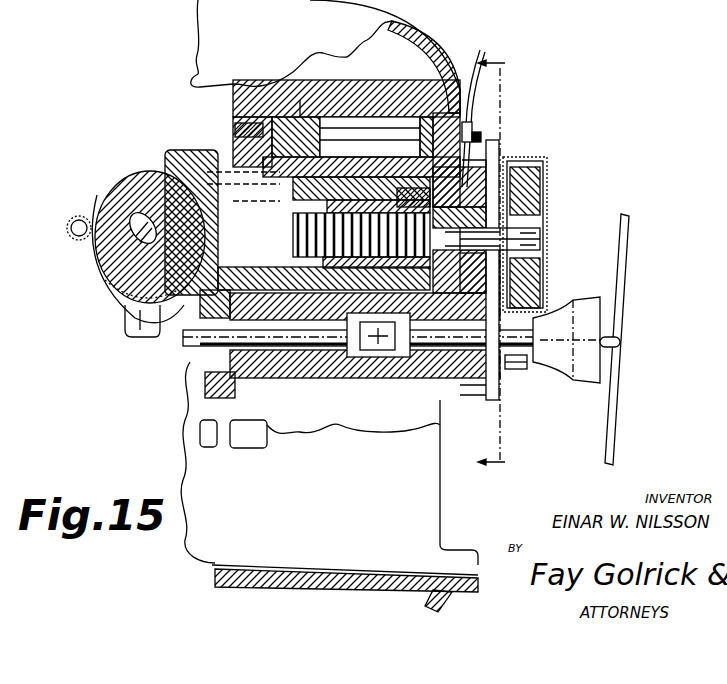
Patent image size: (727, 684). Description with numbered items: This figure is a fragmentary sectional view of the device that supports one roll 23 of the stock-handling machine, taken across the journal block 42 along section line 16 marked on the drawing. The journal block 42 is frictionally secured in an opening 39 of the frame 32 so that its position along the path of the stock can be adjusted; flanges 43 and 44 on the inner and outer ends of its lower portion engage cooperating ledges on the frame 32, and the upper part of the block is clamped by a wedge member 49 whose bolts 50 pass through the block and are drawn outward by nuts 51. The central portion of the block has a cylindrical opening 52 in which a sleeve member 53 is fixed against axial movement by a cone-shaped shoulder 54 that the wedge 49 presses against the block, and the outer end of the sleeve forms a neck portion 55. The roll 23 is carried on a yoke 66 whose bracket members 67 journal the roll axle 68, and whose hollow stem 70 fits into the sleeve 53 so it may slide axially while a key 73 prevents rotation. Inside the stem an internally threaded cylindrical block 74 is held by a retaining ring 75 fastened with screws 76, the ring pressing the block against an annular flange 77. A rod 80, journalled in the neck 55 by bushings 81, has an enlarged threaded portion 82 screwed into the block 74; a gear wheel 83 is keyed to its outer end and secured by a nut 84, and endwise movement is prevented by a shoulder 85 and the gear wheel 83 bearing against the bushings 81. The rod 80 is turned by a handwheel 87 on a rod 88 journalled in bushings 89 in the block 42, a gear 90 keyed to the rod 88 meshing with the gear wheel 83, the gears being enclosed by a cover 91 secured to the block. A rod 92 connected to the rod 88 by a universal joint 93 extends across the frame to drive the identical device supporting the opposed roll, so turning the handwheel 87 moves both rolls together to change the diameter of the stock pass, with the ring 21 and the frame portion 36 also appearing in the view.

The line 16— 16 is at (500, 269).
The ring 21 is at (68, 236).
The roll 23 is at (95, 272).
The frame 32 is at (445, 40).
The housing 36 is at (195, 85).
The opening 39 is at (470, 95).
The journal block 42 is at (483, 145).
The flange 43 is at (228, 372).
The flange 44 is at (485, 388).
The wedge member 49 is at (236, 118).
The bolts 50 is at (476, 132).
The nuts 51 is at (467, 125).
The cylindrical opening 52 is at (345, 160).
The sleeve member 53 is at (435, 114).
The cone-shaped shoulder 54 is at (278, 120).
The neck portion 55 is at (462, 212).
The yoke 66 is at (165, 158).
The bracket members 67 is at (125, 325).
The axle 68 is at (132, 215).
The stem 70 is at (330, 212).
The key 73 is at (234, 160).
The internally threaded cylindrical block 74 is at (315, 262).
The retaining ring 75 is at (500, 273).
The screws 76 is at (400, 188).
The annular flange 77 is at (297, 208).
The rod 80 is at (500, 230).
The bushings 81 is at (468, 235).
The enlarged threaded portion 82 is at (308, 250).
The gear wheel 83 is at (528, 185).
The nut 84 is at (545, 248).
The shoulder 85 is at (462, 195).
The handwheel 87 is at (593, 320).
The rod 88 is at (493, 310).
The bushings 89 is at (400, 380).
The gear 90 is at (523, 368).
The cover 91 is at (530, 157).
The rod 92 is at (182, 335).
The universal joint 93 is at (360, 358).